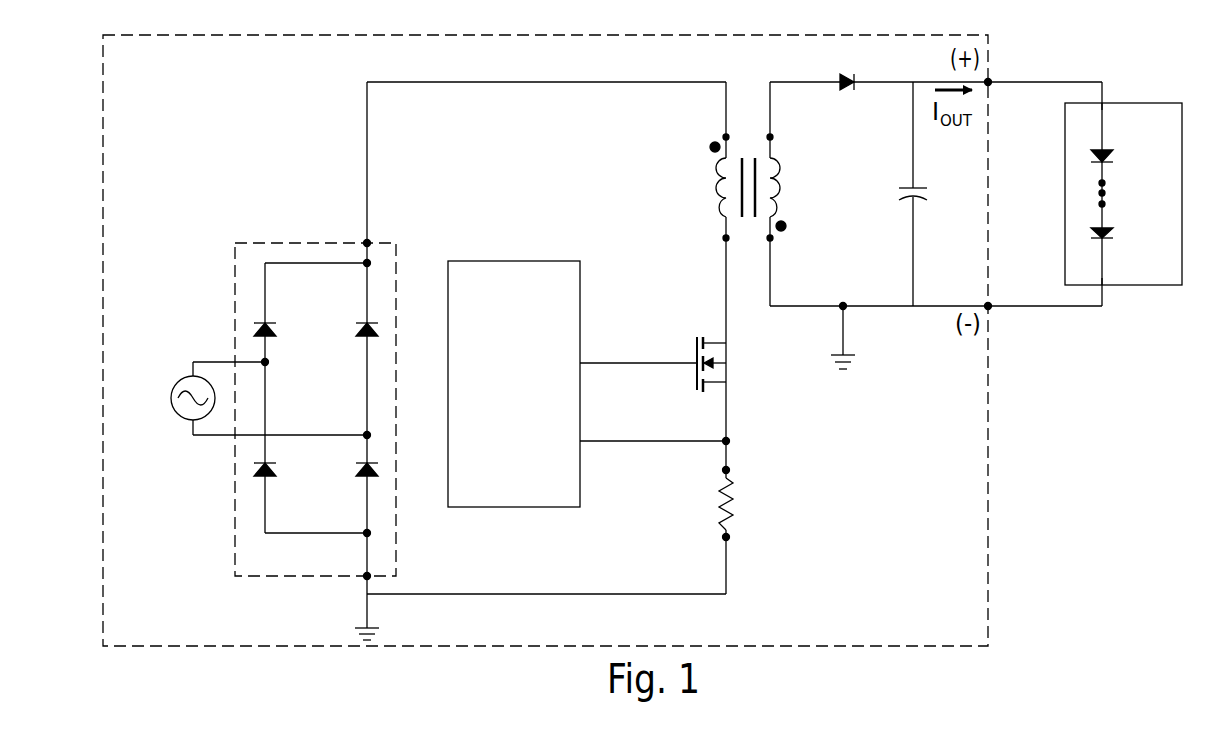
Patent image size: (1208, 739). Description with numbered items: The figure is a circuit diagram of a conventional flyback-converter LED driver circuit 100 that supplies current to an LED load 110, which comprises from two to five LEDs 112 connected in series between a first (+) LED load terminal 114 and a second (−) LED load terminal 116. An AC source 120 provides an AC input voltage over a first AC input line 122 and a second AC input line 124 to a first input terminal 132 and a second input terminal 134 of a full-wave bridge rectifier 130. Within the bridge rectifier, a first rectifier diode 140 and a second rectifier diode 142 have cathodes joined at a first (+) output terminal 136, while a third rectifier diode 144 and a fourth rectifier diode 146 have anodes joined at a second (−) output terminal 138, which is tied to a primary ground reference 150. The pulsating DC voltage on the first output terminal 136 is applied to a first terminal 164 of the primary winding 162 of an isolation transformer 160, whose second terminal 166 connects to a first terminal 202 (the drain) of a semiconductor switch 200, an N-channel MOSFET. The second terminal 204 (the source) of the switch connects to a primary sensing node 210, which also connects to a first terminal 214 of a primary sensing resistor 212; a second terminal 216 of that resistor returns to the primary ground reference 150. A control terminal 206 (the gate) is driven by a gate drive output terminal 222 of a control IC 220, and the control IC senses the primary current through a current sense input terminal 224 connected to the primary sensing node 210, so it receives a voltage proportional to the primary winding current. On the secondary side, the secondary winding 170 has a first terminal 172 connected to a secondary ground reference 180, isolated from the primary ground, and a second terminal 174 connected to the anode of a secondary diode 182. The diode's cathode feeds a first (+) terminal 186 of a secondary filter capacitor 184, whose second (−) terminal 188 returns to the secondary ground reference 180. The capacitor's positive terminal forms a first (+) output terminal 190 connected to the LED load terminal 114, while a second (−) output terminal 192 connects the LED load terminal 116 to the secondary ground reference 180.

The LED driver circuit 100 is at (163, 634).
The LED load 110 is at (1096, 195).
The LEDs 112 is at (1104, 163).
The first (+) LED load terminal 114 is at (1102, 103).
The second (−) LED load terminal 116 is at (1102, 287).
The AC source 120 is at (177, 384).
The first AC input line 122 is at (218, 362).
The second AC input line 124 is at (218, 437).
The full-wave bridge rectifier 130 is at (337, 566).
The first input terminal 132 is at (265, 362).
The second input terminal 134 is at (367, 433).
The first (+) output terminal 136 is at (367, 243).
The second (−) output terminal 138 is at (367, 580).
The first rectifier diode 140 is at (297, 318).
The second rectifier diode 142 is at (362, 332).
The third rectifier diode 144 is at (297, 460).
The fourth rectifier diode 146 is at (362, 473).
The primary ground reference 150 is at (375, 628).
The isolation transformer 160 is at (749, 197).
The primary winding 162 is at (728, 187).
The first terminal 164 is at (726, 137).
The second terminal 166 is at (726, 238).
The secondary winding 170 is at (772, 187).
The first terminal 172 is at (770, 238).
The second terminal 174 is at (770, 137).
The secondary ground reference 180 is at (848, 357).
The secondary diode 182 is at (848, 75).
The secondary filter capacitor 184 is at (911, 194).
The first (+) terminal 186 is at (905, 188).
The second (−) terminal 188 is at (905, 197).
The first (+) output terminal 190 is at (988, 82).
The second (−) output terminal 192 is at (988, 306).
The semiconductor switch 200 is at (681, 370).
The first terminal 202 is at (722, 342).
The second terminal 204 is at (716, 383).
The control terminal 206 is at (697, 368).
The primary sensing node 210 is at (726, 441).
The primary sensing resistor 212 is at (726, 513).
The first terminal 214 is at (726, 470).
The second terminal 216 is at (726, 537).
The LED lighting controller integrated circuit 220 is at (534, 499).
The gate drive (GD) output terminal 222 is at (580, 362).
The current sense (CS) input terminal 224 is at (580, 440).